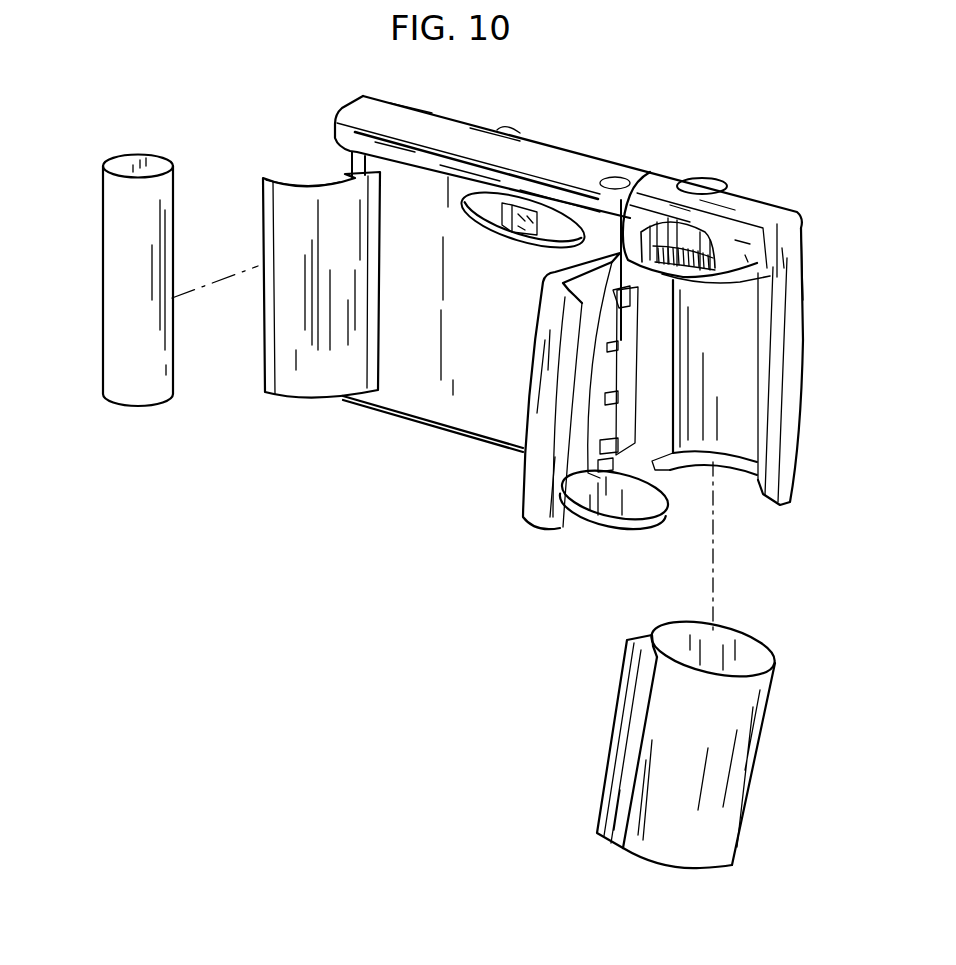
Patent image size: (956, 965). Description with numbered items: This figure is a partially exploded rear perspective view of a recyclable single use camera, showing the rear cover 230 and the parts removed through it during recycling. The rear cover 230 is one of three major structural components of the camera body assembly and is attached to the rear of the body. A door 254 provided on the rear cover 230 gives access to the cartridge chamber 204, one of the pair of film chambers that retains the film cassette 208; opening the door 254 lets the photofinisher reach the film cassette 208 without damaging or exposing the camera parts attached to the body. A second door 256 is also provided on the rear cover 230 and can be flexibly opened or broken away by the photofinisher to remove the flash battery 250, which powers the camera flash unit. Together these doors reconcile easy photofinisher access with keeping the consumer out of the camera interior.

The flash battery 250 is at (107, 247).
The second door 256 is at (283, 333).
The rear cover 230 is at (482, 417).
The door 254 is at (600, 530).
The cartridge chamber 204 is at (742, 417).
The film cassette 208 is at (770, 710).